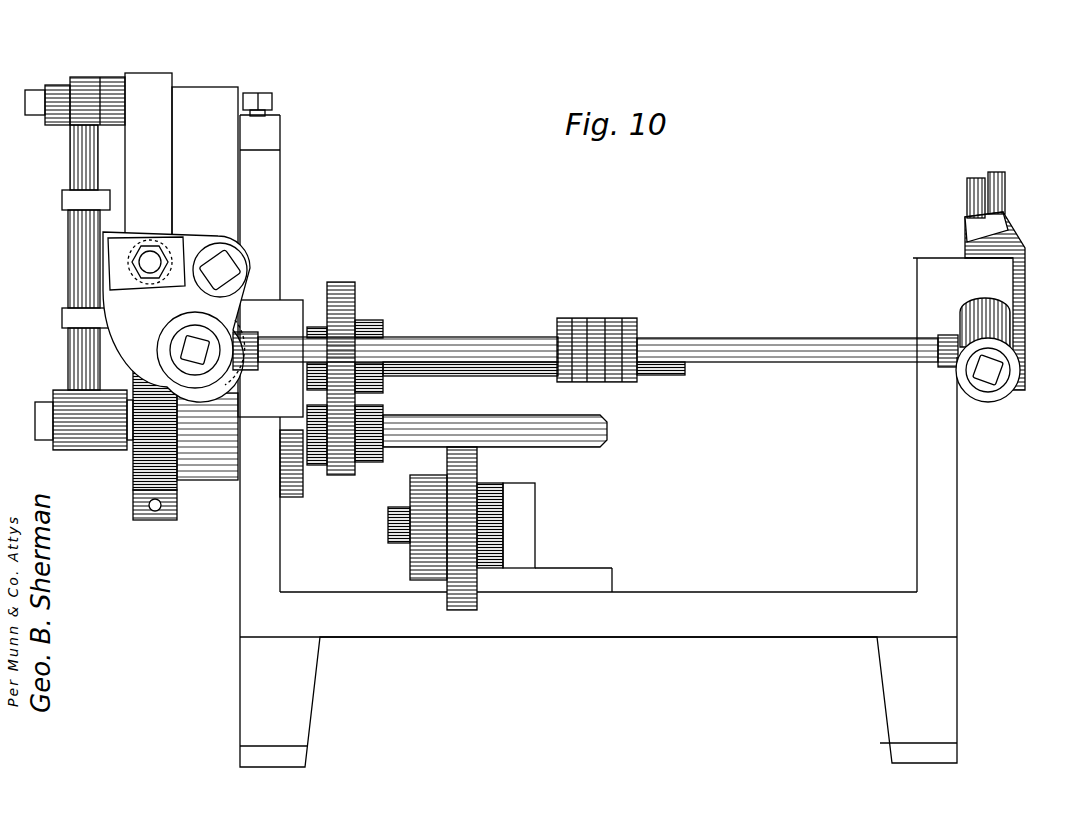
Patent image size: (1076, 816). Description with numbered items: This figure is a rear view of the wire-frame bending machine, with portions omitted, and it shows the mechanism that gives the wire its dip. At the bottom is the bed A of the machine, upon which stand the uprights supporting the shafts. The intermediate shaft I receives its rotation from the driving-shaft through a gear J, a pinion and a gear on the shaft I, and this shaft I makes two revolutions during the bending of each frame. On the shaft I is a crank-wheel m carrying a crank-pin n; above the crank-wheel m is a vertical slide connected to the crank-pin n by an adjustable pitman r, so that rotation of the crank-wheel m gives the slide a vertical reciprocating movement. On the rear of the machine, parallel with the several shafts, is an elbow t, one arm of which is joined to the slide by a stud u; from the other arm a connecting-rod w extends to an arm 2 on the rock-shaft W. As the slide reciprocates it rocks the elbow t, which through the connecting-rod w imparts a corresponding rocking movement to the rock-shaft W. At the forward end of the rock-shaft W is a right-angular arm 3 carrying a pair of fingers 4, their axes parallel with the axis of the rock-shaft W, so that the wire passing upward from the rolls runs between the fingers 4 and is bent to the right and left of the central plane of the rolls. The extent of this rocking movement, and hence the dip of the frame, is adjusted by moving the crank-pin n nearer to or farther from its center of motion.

The bed A is at (569, 420).
The adjustable pitman r is at (152, 208).
The crank-pin n is at (74, 420).
The crank-wheel m is at (185, 439).
The elbow t is at (176, 317).
The stud u is at (150, 262).
The connecting-rod w is at (595, 389).
The intermediate shaft I is at (495, 444).
The gear J is at (461, 528).
The right-angular arm 3 is at (995, 301).
The fingers 4 is at (985, 185).
The arm 2 is at (985, 315).
The rock-shaft W is at (1032, 362).